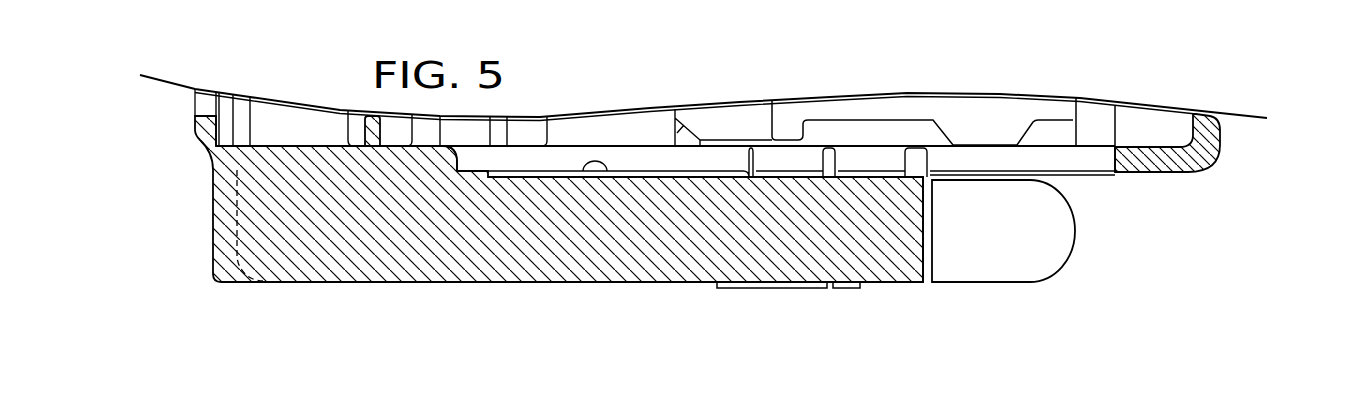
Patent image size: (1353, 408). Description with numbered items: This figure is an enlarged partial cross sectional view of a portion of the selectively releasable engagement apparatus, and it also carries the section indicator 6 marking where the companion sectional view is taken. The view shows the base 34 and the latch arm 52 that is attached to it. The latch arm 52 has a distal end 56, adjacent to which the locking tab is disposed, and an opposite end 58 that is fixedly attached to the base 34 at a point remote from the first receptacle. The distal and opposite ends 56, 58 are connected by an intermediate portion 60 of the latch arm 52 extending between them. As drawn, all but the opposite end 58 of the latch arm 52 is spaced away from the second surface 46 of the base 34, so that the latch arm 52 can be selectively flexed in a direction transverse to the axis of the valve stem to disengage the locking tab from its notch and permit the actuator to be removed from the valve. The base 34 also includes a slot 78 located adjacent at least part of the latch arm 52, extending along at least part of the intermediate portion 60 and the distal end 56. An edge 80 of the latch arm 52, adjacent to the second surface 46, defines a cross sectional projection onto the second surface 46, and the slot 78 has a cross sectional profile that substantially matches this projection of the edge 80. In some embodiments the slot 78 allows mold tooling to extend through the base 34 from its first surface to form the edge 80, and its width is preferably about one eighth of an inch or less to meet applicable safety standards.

The base 34 is at (1215, 152).
The second surface 46 is at (1183, 174).
The latch arm 52 is at (512, 267).
The distal end 56 is at (1055, 237).
The opposite end 58 is at (263, 283).
The intermediate portion 60 is at (672, 267).
The slot 78 is at (1081, 166).
The edge 80 is at (585, 178).
The section line 6- 6 is at (143, 186).